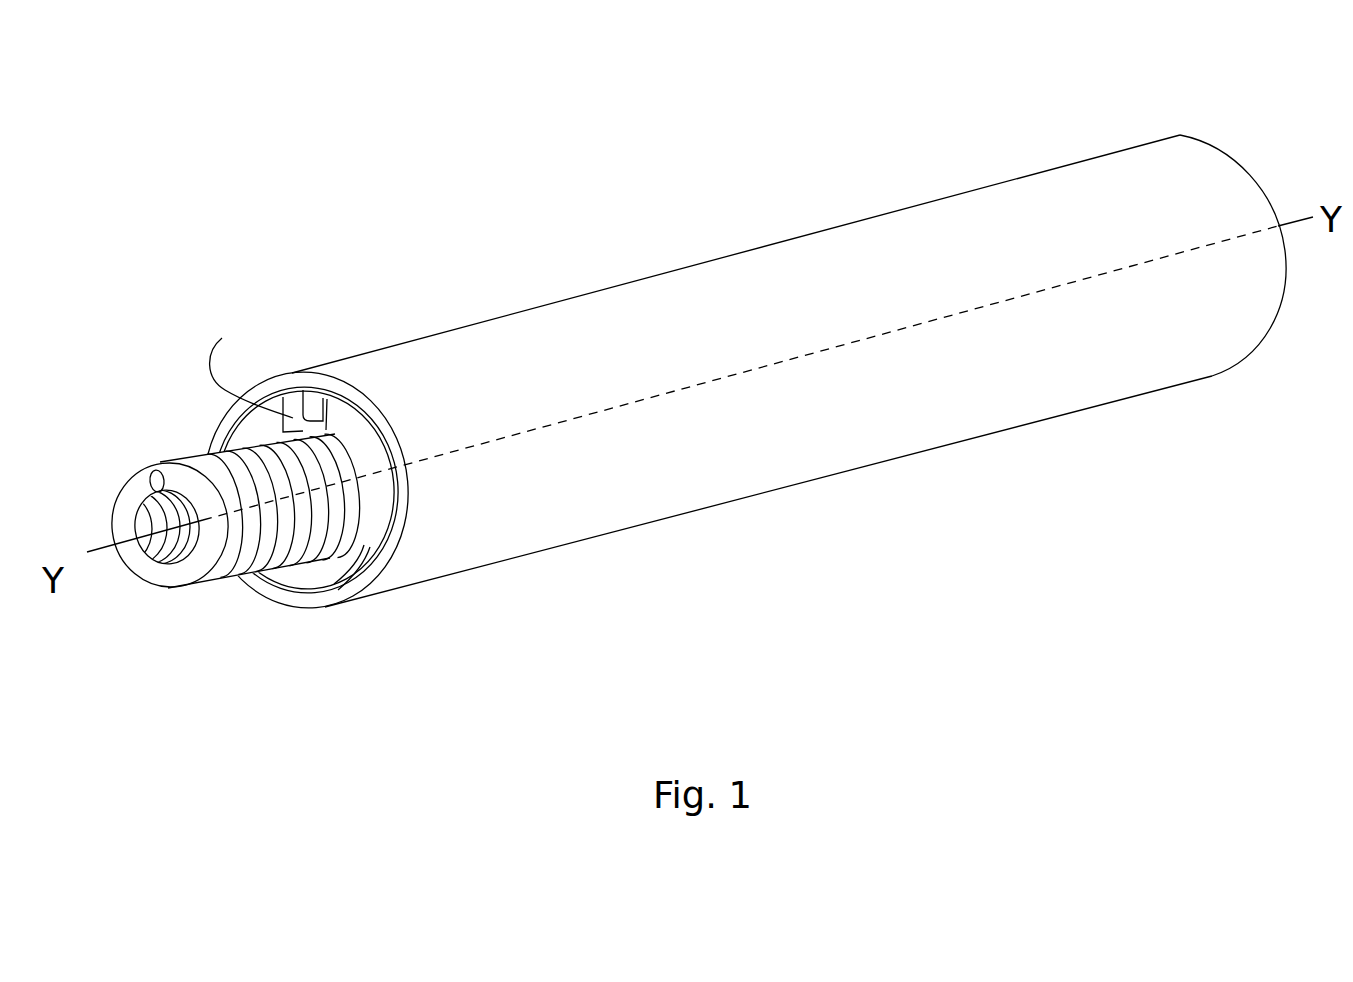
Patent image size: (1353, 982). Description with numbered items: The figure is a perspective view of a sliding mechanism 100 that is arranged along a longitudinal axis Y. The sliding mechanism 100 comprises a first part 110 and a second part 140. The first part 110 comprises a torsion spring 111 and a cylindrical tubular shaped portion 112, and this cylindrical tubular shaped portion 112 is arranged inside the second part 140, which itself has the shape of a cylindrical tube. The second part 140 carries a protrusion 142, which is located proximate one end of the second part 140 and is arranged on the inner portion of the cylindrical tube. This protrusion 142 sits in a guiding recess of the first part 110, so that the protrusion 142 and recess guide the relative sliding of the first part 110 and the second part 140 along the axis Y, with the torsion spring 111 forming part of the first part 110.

The sliding mechanism 100 is at (687, 406).
The first part 110 is at (243, 497).
The torsion spring 111 is at (203, 553).
The cylindrical tubular shaped portion 112 is at (337, 603).
The second part 140 is at (872, 460).
The protrusion 142 is at (313, 407).